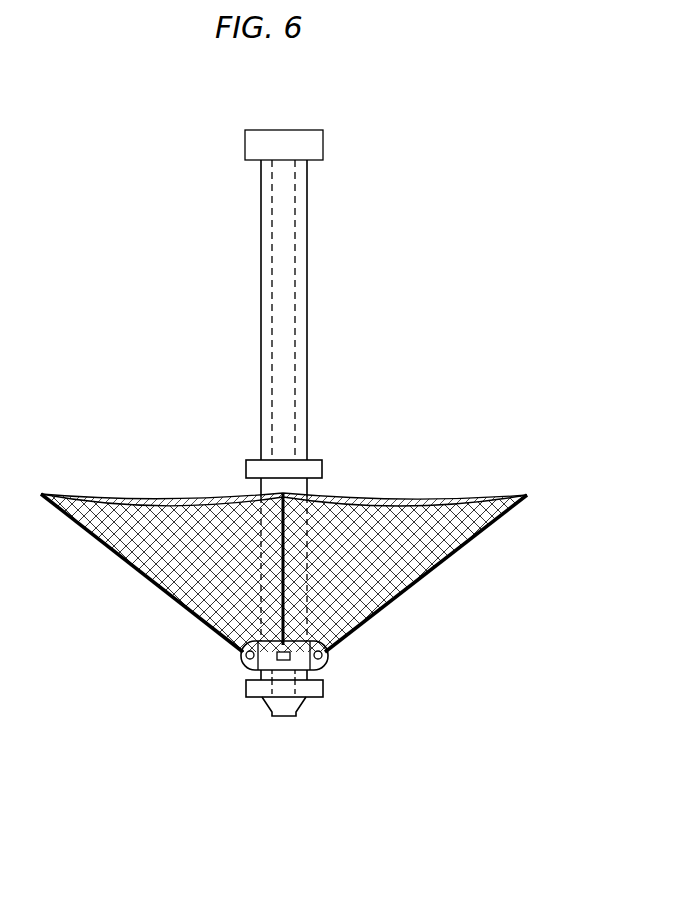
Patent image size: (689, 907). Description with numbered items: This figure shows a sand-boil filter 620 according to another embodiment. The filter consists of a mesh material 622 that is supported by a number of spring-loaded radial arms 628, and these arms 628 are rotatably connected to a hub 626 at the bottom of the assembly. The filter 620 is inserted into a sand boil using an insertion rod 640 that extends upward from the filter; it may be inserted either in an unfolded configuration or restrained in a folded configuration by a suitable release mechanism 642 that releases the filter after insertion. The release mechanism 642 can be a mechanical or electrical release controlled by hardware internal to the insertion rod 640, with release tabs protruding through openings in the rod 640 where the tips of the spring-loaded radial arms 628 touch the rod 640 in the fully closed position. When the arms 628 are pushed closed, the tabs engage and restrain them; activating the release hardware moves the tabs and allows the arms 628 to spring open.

The sand-boil filter 620 is at (297, 555).
The mesh material 622 is at (387, 573).
The hub 626 is at (245, 686).
The spring-loaded radial arms 628 is at (118, 562).
The insertion rod 640 is at (307, 256).
The release mechanism 642 is at (322, 462).